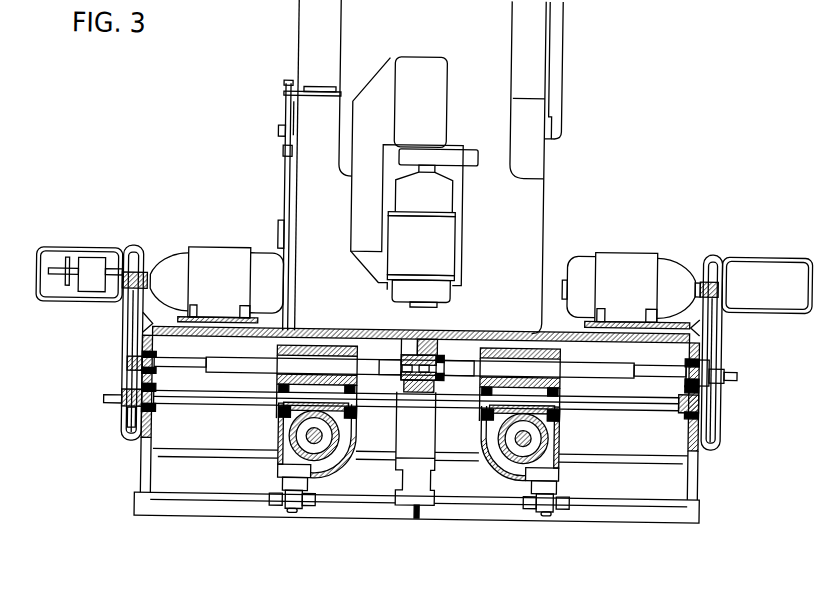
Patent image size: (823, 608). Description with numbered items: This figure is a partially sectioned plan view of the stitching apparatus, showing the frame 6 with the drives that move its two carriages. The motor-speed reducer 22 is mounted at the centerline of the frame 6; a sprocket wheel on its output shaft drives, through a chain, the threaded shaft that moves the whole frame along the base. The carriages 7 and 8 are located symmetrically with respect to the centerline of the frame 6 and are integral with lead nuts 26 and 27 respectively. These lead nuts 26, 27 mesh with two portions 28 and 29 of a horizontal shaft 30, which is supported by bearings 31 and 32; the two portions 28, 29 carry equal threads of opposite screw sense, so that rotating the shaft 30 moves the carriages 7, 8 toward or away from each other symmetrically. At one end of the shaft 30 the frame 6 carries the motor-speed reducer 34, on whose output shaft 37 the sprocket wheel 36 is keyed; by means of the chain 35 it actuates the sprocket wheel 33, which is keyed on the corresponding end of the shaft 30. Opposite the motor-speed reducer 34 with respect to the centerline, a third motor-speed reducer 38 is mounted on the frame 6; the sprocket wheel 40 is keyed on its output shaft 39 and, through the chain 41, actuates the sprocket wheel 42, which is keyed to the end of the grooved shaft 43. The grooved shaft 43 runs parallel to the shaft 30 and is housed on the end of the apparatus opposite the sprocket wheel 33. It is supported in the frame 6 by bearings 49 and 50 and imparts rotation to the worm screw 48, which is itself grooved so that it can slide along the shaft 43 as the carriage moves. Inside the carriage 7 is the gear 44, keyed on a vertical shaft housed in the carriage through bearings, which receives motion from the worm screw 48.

The frame 6 is at (429, 341).
The carriage 7 is at (564, 429).
The carriage 8 is at (278, 425).
The motor-speed reducer 22 is at (446, 247).
The lead nut 26 is at (483, 348).
The lead nut 27 is at (360, 349).
The threaded portion of horizontal shaft 28 is at (463, 360).
The threaded portion of horizontal shaft 29 is at (386, 359).
The horizontal shaft 30 is at (659, 369).
The bearing 31 is at (687, 363).
The bearing 32 is at (140, 376).
The sprocket wheel 33 is at (712, 383).
The motor-speed reducer 34 is at (584, 264).
The chain 35 is at (712, 345).
The sprocket wheel 36 is at (714, 310).
The output shaft 37 is at (718, 285).
The motor-speed reducer 38 is at (263, 263).
The output shaft 39 is at (144, 276).
The sprocket wheel 40 is at (130, 295).
The chain 41 is at (130, 339).
The sprocket wheel 42 is at (129, 422).
The grooved shaft 43 is at (218, 407).
The gear 44 is at (506, 460).
The worm screw 48 is at (564, 388).
The bearing 49 is at (157, 411).
The bearing 50 is at (706, 413).